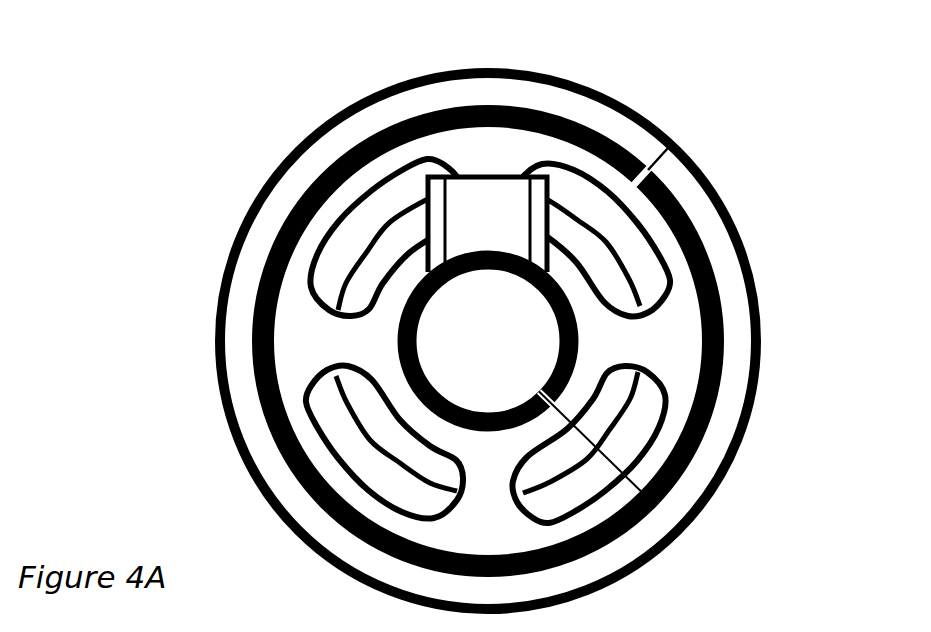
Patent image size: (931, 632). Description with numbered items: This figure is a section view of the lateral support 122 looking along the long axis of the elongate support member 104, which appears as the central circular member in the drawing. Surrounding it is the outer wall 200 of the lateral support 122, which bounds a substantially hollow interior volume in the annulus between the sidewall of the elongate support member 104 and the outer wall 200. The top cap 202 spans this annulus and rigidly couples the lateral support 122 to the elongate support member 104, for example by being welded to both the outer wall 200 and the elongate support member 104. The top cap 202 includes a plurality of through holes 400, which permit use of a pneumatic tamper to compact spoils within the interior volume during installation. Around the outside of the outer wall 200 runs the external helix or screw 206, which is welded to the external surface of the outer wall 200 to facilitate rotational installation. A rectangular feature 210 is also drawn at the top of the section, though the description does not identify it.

The elongate support member 104 is at (578, 348).
The lateral support 122 is at (498, 314).
The outer wall 200 is at (260, 398).
The top cap 202 is at (285, 340).
The external helix 206 is at (227, 262).
The key slot 210 is at (455, 175).
The through holes 400 is at (352, 231).